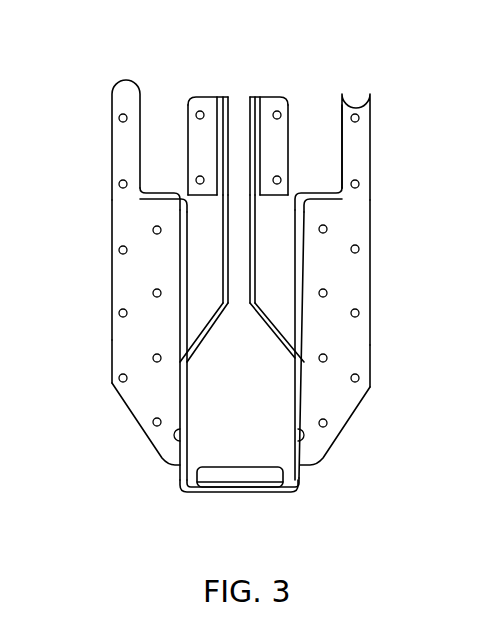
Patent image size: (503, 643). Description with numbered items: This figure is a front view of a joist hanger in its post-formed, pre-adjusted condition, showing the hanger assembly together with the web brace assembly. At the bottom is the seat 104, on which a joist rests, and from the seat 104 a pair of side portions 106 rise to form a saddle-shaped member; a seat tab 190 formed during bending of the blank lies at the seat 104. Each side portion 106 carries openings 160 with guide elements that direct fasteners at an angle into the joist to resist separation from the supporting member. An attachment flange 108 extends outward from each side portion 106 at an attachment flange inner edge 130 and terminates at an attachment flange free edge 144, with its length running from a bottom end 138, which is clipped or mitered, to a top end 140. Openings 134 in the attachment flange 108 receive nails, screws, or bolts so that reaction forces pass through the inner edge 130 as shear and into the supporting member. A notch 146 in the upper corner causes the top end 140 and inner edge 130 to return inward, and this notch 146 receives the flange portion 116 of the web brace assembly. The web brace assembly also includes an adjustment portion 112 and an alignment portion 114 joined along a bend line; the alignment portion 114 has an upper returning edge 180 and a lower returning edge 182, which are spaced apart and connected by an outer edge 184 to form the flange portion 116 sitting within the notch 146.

The seat 104 is at (252, 499).
The side portion 106 is at (303, 325).
The attachment flange 108 is at (355, 286).
The adjustment portion 112 is at (211, 321).
The alignment portion 114 is at (226, 258).
The flange portion 116 is at (194, 126).
The attachment flange inner edge 130 is at (170, 262).
The openings 134 is at (113, 382).
The bottom end 138 is at (132, 413).
The top end 140 is at (123, 78).
The attachment flange free edge 144 is at (110, 210).
The notch 146 is at (323, 123).
The openings 160 is at (305, 440).
The upper returning edge 180 is at (207, 97).
The lower returning edge 182 is at (208, 200).
The outer edge 184 is at (187, 147).
The seat tab 190 is at (230, 470).